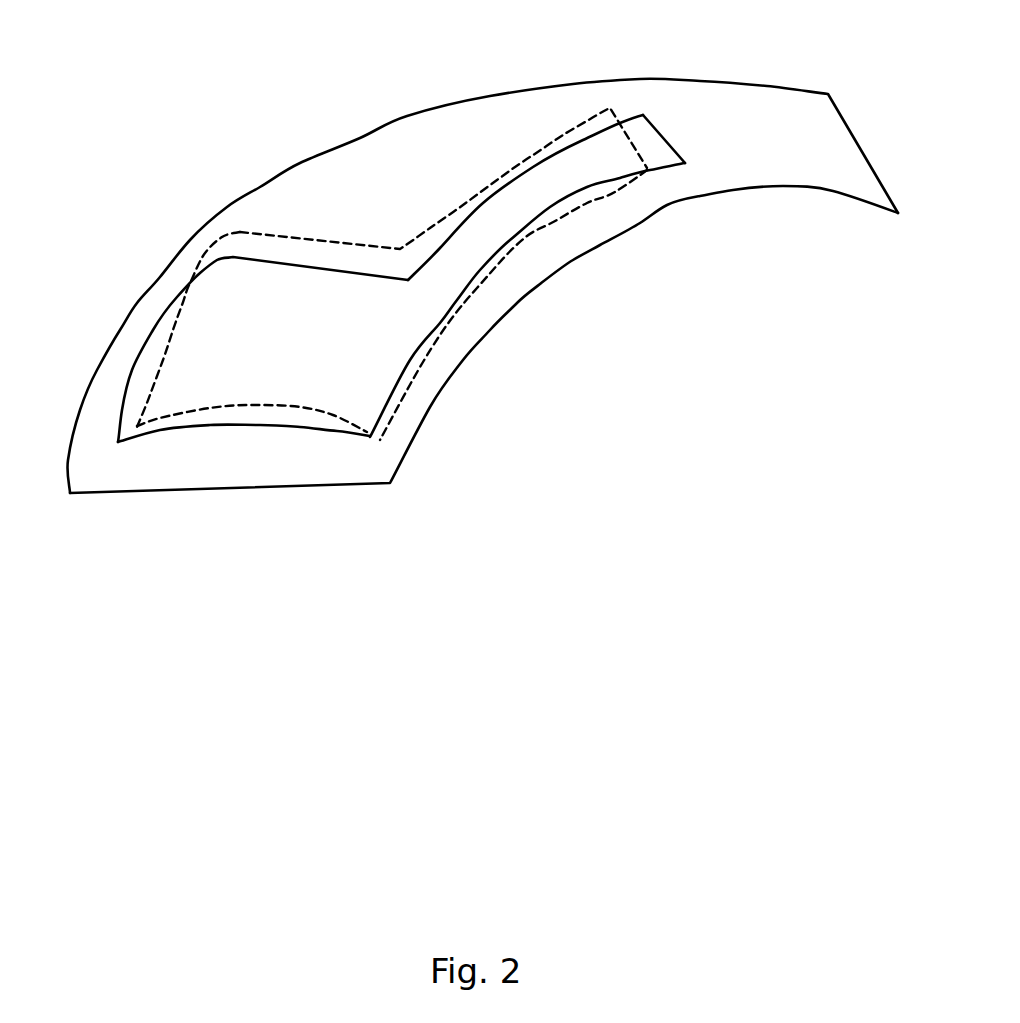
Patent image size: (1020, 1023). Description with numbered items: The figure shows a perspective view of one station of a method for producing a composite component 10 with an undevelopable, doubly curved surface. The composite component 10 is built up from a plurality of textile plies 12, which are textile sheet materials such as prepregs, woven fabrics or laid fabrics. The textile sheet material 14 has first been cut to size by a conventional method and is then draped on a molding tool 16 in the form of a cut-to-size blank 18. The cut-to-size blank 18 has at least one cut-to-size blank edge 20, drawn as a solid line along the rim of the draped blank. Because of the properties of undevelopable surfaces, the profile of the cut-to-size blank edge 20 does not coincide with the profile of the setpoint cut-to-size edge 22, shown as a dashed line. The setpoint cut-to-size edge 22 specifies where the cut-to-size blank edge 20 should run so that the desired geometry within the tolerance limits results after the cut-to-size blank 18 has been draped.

The composite component 10 is at (461, 294).
The textile ply 12 is at (642, 125).
The textile sheet material 14 is at (657, 147).
The molding tool 16 is at (400, 121).
The cut-to-size blank 18 is at (378, 387).
The cut-to-size blank edge 20 is at (152, 338).
The setpoint cut-to-size edge 22 is at (203, 262).